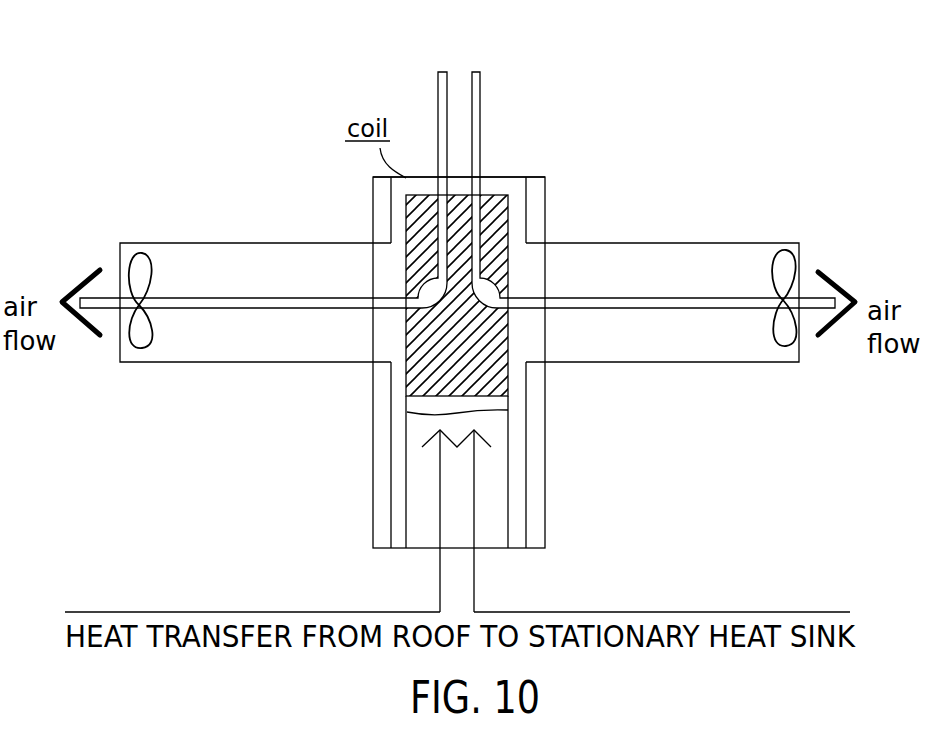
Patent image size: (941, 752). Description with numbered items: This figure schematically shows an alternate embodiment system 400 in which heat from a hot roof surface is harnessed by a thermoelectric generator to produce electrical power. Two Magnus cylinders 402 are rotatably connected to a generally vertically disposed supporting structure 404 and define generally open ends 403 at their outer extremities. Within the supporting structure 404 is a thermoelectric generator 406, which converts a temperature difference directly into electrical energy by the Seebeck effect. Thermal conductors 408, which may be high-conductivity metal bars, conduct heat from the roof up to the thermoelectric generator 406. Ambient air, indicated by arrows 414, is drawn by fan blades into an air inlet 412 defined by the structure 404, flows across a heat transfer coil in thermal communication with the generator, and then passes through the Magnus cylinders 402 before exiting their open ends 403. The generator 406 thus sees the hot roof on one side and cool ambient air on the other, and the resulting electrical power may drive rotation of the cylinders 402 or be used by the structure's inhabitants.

The alternate embodiment system 400 is at (254, 122).
The Magnus cylinder 402 is at (316, 243).
The generally open end 403 is at (117, 346).
The supporting structure 404 is at (368, 434).
The thermoelectric generator 406 is at (492, 404).
The thermal conductor 408 is at (296, 612).
The air inlet 412 is at (499, 174).
The ambient air arrows 414 is at (480, 81).